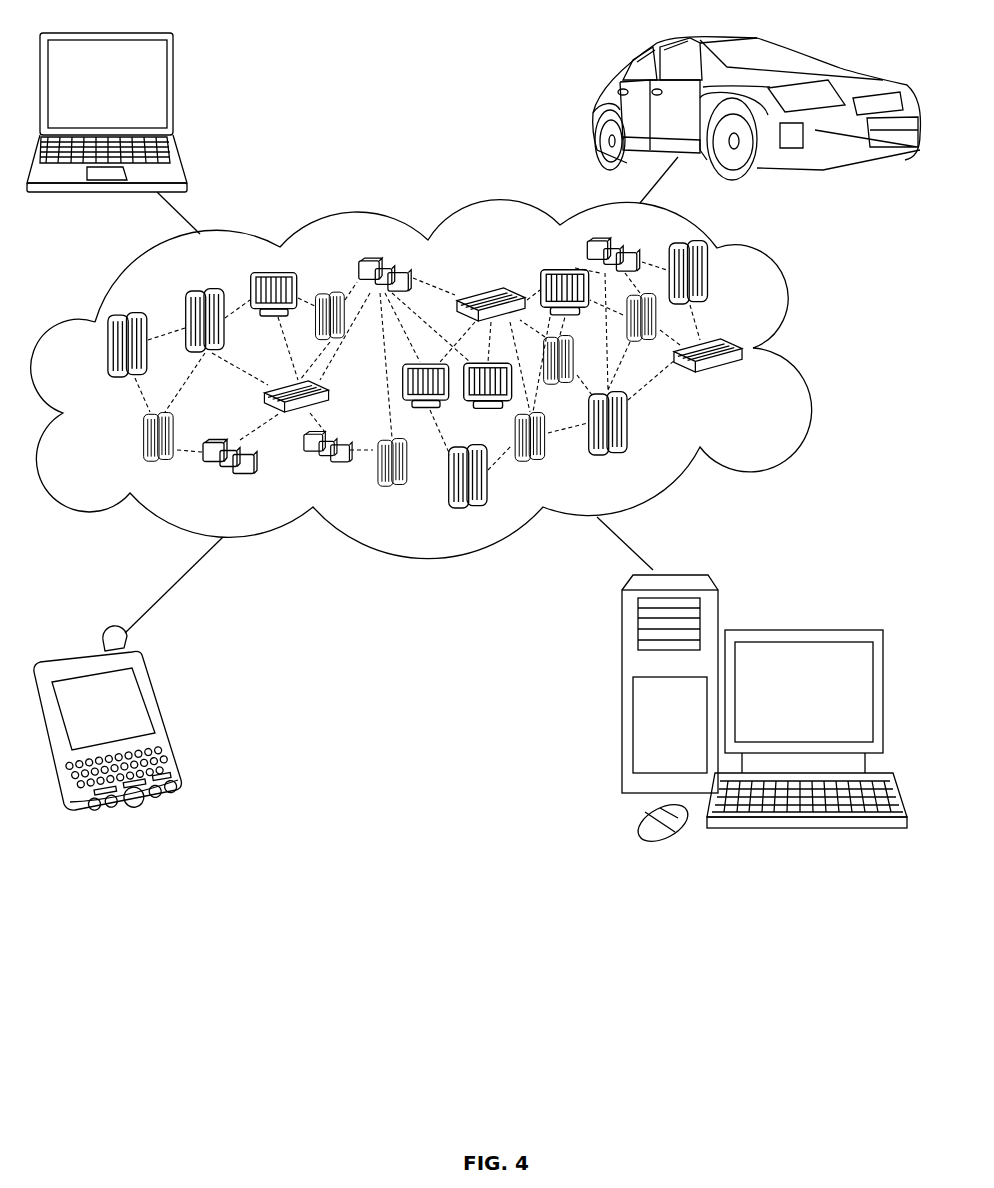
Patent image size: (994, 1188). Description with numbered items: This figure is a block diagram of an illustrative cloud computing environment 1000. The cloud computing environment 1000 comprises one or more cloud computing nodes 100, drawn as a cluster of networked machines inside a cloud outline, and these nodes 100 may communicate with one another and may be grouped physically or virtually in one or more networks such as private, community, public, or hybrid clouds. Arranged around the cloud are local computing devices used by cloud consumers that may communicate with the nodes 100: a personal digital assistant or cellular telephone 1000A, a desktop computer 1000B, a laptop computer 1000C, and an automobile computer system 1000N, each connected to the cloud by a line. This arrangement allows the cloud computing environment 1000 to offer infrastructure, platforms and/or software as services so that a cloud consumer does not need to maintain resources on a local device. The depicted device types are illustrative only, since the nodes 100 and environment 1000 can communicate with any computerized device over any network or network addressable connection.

The cloud computing environment 1000 is at (800, 357).
The cloud computing nodes 100 is at (745, 382).
The personal digital assistant or cellular telephone 1000A is at (165, 718).
The desktop computer 1000B is at (800, 627).
The laptop computer 1000C is at (173, 93).
The automobile computer system 1000N is at (590, 108).